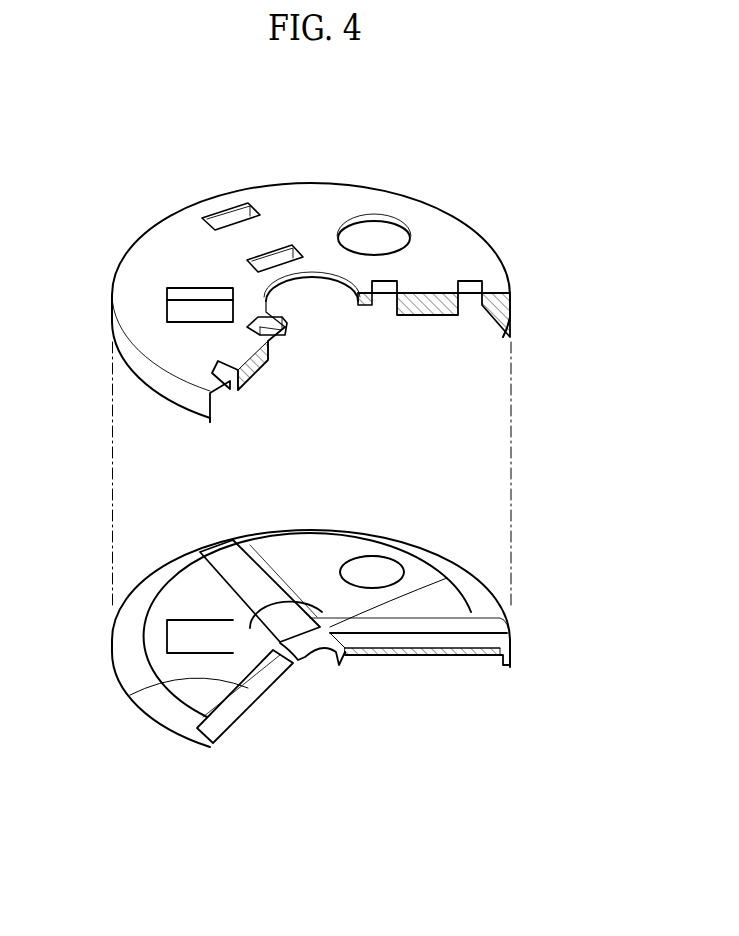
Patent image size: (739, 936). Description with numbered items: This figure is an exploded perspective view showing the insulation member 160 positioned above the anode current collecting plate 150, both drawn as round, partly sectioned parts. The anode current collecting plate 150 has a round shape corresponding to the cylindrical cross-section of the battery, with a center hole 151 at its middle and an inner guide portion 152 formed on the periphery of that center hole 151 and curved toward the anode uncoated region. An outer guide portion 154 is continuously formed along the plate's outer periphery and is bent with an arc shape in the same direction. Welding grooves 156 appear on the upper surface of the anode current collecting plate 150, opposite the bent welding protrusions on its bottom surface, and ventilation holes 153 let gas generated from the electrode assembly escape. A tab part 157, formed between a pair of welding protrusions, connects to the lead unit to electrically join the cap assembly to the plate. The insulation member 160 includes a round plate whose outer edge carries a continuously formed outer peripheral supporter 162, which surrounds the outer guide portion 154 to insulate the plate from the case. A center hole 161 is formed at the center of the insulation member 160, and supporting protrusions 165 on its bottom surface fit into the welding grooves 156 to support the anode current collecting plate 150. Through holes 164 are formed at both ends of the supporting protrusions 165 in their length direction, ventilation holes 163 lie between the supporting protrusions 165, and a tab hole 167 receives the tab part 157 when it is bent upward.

The anode current collecting plate 150 is at (488, 591).
The center hole 151 is at (326, 635).
The inner guide portion 152 is at (400, 596).
The ventilation holes 153 is at (378, 556).
The outer guide portion 154 is at (172, 708).
The welding grooves 156 is at (130, 695).
The tab part 157 is at (195, 618).
The insulation member 160 is at (473, 222).
The center hole 161 is at (316, 284).
The outer peripheral supporter 162 is at (492, 319).
The ventilation holes 163 is at (384, 213).
The through holes 164 is at (483, 283).
The supporting protrusions 165 is at (426, 317).
The tab hole 167 is at (197, 288).